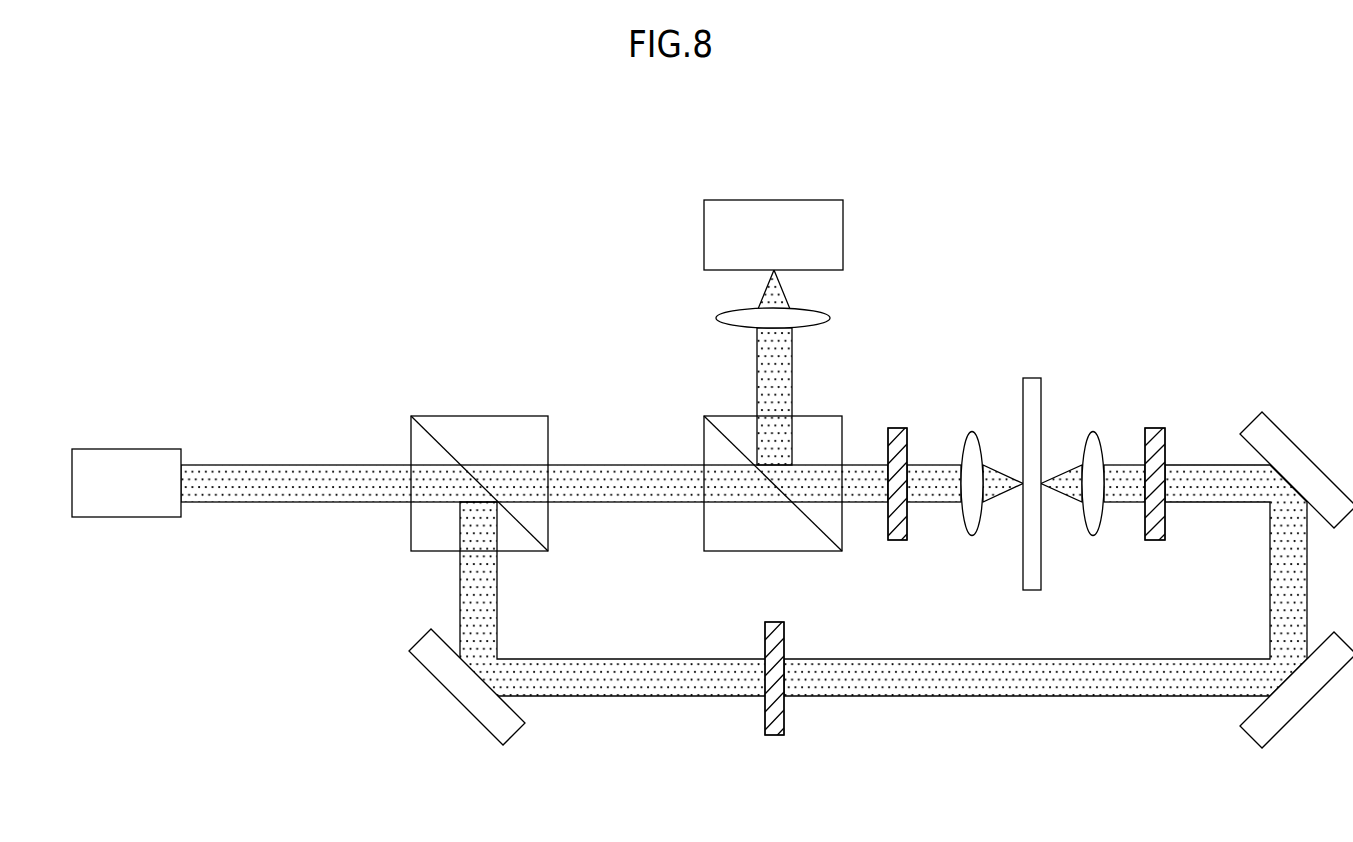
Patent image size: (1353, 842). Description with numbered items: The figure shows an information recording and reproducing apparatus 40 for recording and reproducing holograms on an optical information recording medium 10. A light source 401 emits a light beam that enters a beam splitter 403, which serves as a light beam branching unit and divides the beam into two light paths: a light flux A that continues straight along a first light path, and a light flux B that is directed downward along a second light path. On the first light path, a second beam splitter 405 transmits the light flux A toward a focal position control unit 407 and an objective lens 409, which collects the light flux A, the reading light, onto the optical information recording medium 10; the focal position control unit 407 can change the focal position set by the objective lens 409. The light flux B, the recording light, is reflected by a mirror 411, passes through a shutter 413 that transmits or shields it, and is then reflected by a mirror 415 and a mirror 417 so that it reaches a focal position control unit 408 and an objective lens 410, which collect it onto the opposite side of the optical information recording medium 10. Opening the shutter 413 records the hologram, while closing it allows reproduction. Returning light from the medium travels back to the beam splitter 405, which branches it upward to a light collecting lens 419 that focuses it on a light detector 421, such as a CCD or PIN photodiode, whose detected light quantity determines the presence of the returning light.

The information recording and reproducing apparatus 40 is at (566, 133).
The light source 401 is at (128, 449).
The beam splitter 403 is at (425, 416).
The beam splitter 405 is at (718, 416).
The focal position control unit 407 is at (899, 428).
The focal position control unit 408 is at (1156, 428).
The objective lens 409 is at (972, 431).
The objective lens 410 is at (1093, 431).
The optical information recording medium 10 is at (1033, 378).
The mirror 411 is at (468, 705).
The shutter 413 is at (777, 735).
The mirror 415 is at (1297, 706).
The mirror 417 is at (1290, 447).
The light collecting lens 419 is at (828, 312).
The light detector 421 is at (775, 200).